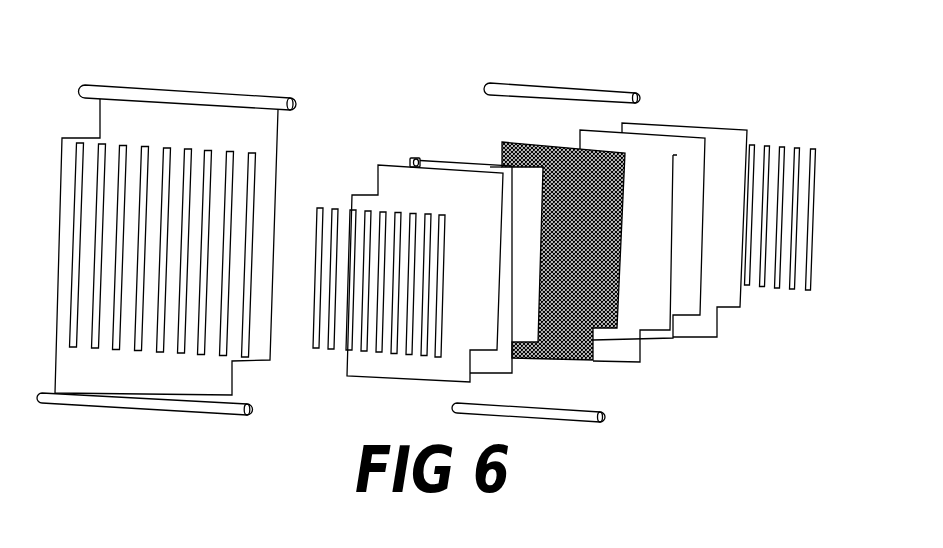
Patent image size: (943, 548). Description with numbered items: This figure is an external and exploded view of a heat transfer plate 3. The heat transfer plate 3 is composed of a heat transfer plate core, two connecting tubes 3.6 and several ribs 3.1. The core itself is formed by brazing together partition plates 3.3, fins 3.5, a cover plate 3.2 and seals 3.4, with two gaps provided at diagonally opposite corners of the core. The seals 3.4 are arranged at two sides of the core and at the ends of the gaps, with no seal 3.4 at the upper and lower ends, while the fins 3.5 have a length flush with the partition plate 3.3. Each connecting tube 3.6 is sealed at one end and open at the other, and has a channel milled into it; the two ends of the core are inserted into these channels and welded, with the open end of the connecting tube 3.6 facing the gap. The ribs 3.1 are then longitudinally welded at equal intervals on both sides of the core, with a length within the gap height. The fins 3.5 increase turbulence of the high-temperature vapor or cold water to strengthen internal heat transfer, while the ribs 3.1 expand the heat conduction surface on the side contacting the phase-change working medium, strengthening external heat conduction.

The heat transfer plate 3 is at (213, 110).
The rib 3.1 is at (323, 210).
The cover plate 3.2 is at (383, 195).
The partition plate 3.3 is at (425, 164).
The seal 3.4 is at (437, 158).
The fin 3.5 is at (502, 143).
The connecting tube 3.6 is at (558, 89).